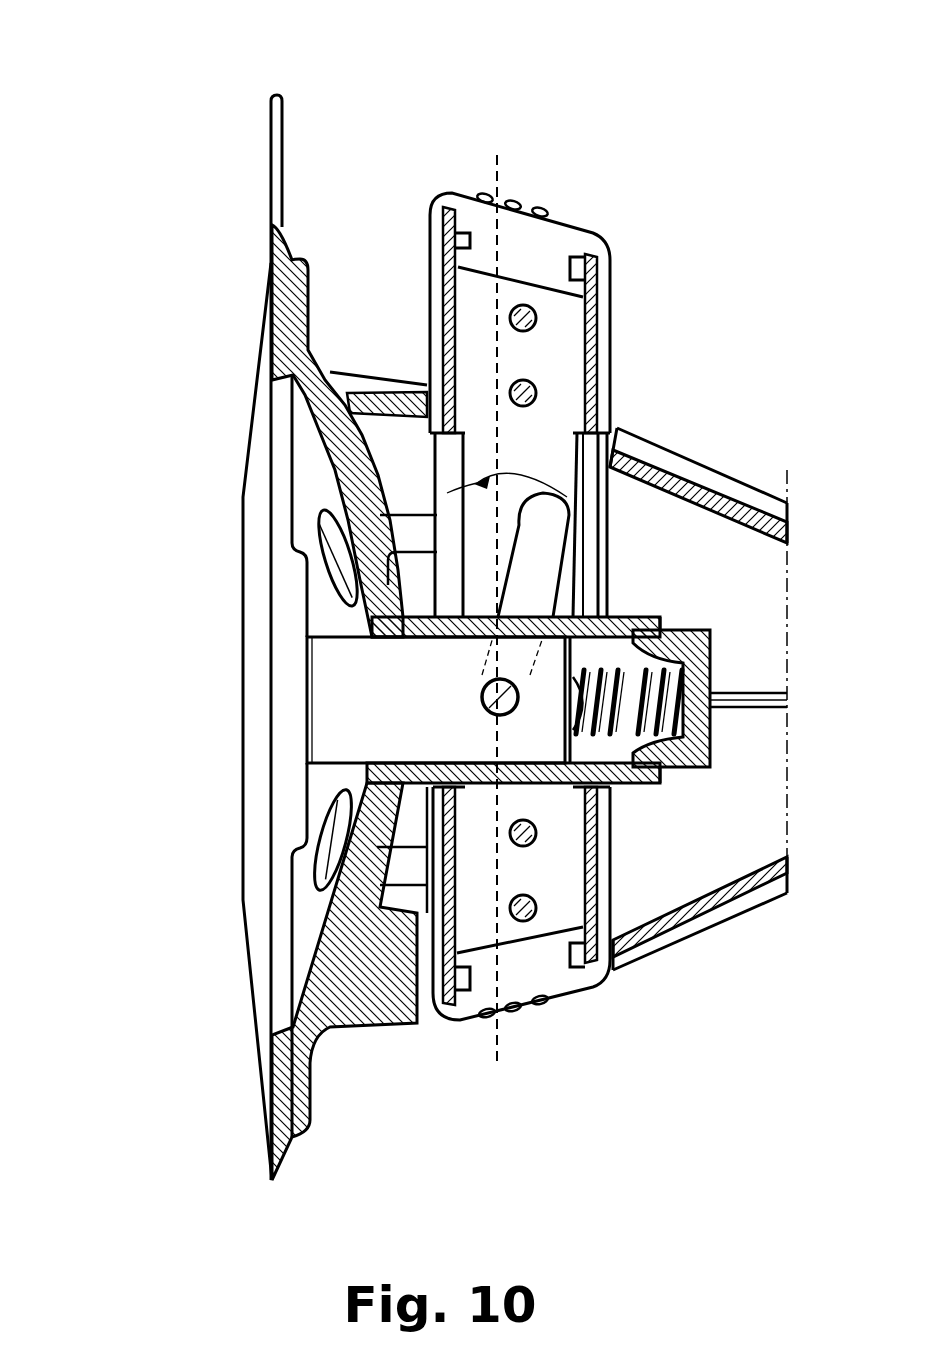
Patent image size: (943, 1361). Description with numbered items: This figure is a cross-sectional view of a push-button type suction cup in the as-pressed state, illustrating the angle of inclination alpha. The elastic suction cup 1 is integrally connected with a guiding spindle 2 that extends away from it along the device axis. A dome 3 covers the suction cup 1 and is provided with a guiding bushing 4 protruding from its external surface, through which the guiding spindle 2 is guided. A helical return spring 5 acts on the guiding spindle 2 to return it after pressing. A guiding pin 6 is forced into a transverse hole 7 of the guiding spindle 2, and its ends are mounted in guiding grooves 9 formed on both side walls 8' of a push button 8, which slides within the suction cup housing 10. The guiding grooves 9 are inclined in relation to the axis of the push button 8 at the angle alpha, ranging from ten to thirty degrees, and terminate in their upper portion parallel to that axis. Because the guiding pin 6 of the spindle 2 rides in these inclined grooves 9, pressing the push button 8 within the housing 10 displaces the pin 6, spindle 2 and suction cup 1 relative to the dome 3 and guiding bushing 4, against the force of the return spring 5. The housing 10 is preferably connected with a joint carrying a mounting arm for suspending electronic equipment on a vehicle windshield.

The elastic suction cup 1 is at (280, 447).
The guiding spindle 2 is at (372, 690).
The dome 3 is at (318, 368).
The guiding bushing 4 is at (460, 780).
The helical return spring 5 is at (608, 673).
The guiding pin 6 is at (521, 710).
The transverse hole 7 is at (486, 713).
The push button 8 is at (564, 319).
The side walls 8' is at (521, 966).
The guiding grooves 9 is at (693, 737).
The suction cup housing 10 is at (705, 470).